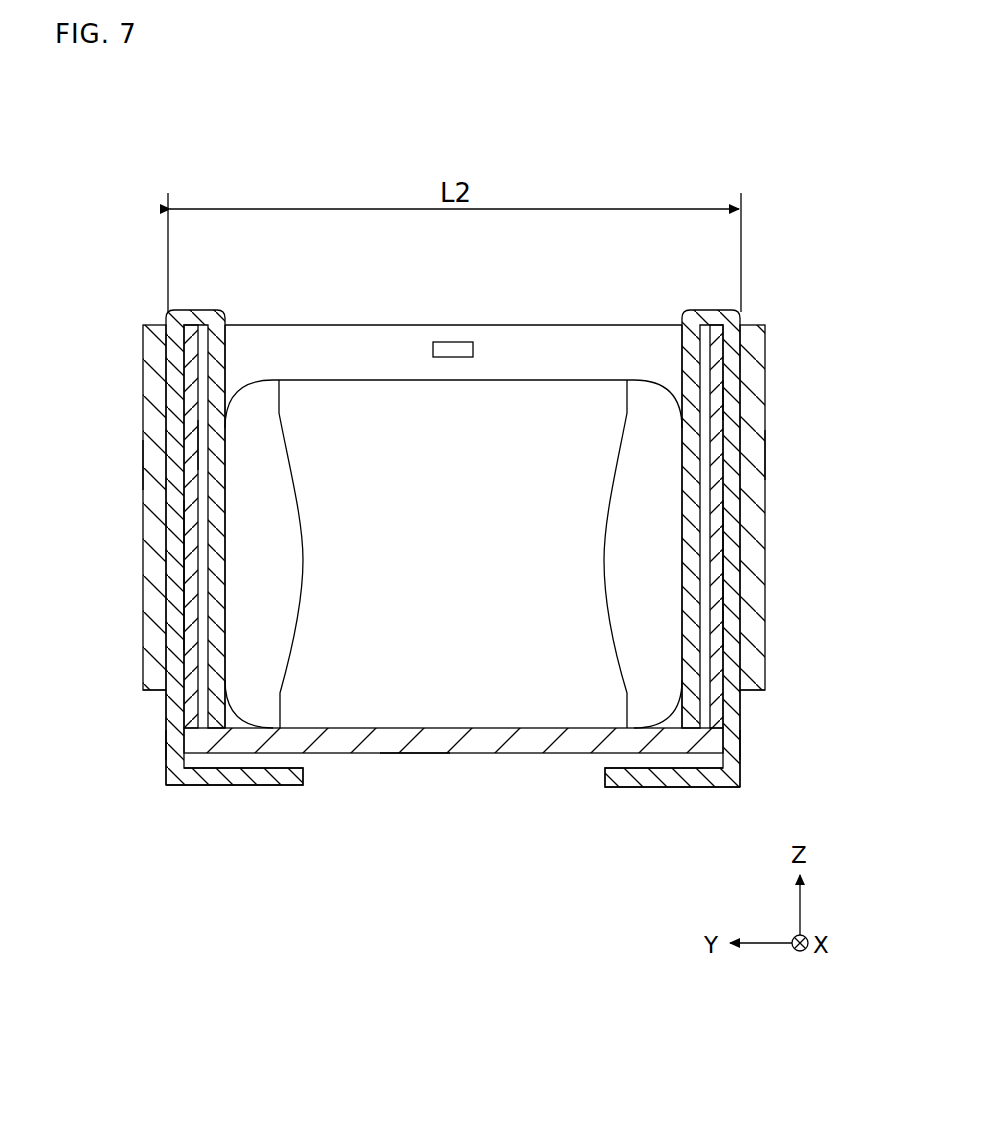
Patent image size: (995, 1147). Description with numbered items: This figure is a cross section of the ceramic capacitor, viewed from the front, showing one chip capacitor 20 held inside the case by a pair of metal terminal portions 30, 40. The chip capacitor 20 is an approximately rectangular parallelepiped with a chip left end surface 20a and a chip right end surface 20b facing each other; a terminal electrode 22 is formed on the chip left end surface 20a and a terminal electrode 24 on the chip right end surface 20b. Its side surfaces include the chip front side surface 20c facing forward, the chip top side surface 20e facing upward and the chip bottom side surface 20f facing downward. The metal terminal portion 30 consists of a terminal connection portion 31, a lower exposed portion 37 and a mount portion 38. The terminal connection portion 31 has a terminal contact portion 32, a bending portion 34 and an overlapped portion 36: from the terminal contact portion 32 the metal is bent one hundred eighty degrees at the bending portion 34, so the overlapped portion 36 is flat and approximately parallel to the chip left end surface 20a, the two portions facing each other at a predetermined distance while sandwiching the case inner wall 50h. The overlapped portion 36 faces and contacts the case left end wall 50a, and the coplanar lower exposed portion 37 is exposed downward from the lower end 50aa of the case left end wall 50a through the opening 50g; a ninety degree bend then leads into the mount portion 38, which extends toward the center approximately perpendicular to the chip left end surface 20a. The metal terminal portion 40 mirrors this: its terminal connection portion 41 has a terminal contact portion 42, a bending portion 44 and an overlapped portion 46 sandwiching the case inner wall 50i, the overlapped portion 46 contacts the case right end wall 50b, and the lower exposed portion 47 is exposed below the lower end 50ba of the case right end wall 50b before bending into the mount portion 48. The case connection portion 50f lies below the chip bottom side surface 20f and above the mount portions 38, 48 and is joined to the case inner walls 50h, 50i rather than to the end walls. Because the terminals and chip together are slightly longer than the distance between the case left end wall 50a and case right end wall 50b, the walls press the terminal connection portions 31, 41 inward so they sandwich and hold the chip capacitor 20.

The chip capacitor 20 is at (523, 376).
The chip left end surface 20a is at (225, 500).
The chip right end surface 20b is at (683, 483).
The chip front side surface 20c is at (468, 573).
The chip top side surface 20e is at (377, 380).
The chip bottom side surface 20f is at (487, 752).
The terminal electrode 22 is at (259, 408).
The terminal electrode 24 is at (643, 408).
The metal terminal portion 30 is at (92, 290).
The terminal connection portion 31 is at (160, 308).
The terminal contact portion 32 is at (223, 403).
The bending portion 34 is at (200, 318).
The overlapped portion 36 is at (177, 577).
The lower exposed portion 37 is at (167, 730).
The mount portion 38 is at (247, 778).
The metal terminal portion 40 is at (805, 260).
The terminal connection portion 41 is at (753, 313).
The terminal contact portion 42 is at (683, 618).
The bending portion 44 is at (703, 310).
The overlapped portion 46 is at (733, 573).
The lower exposed portion 47 is at (743, 732).
The mount portion 48 is at (655, 778).
The case left end wall 50a is at (153, 465).
The lower end of case left end wall 50aa is at (157, 693).
The case right end wall 50b is at (750, 442).
The lower end of case right end wall 50ba is at (748, 695).
The case connection portion 50f is at (417, 753).
The opening 50g is at (163, 745).
The case inner wall 50h is at (190, 448).
The case inner wall 50i is at (715, 390).